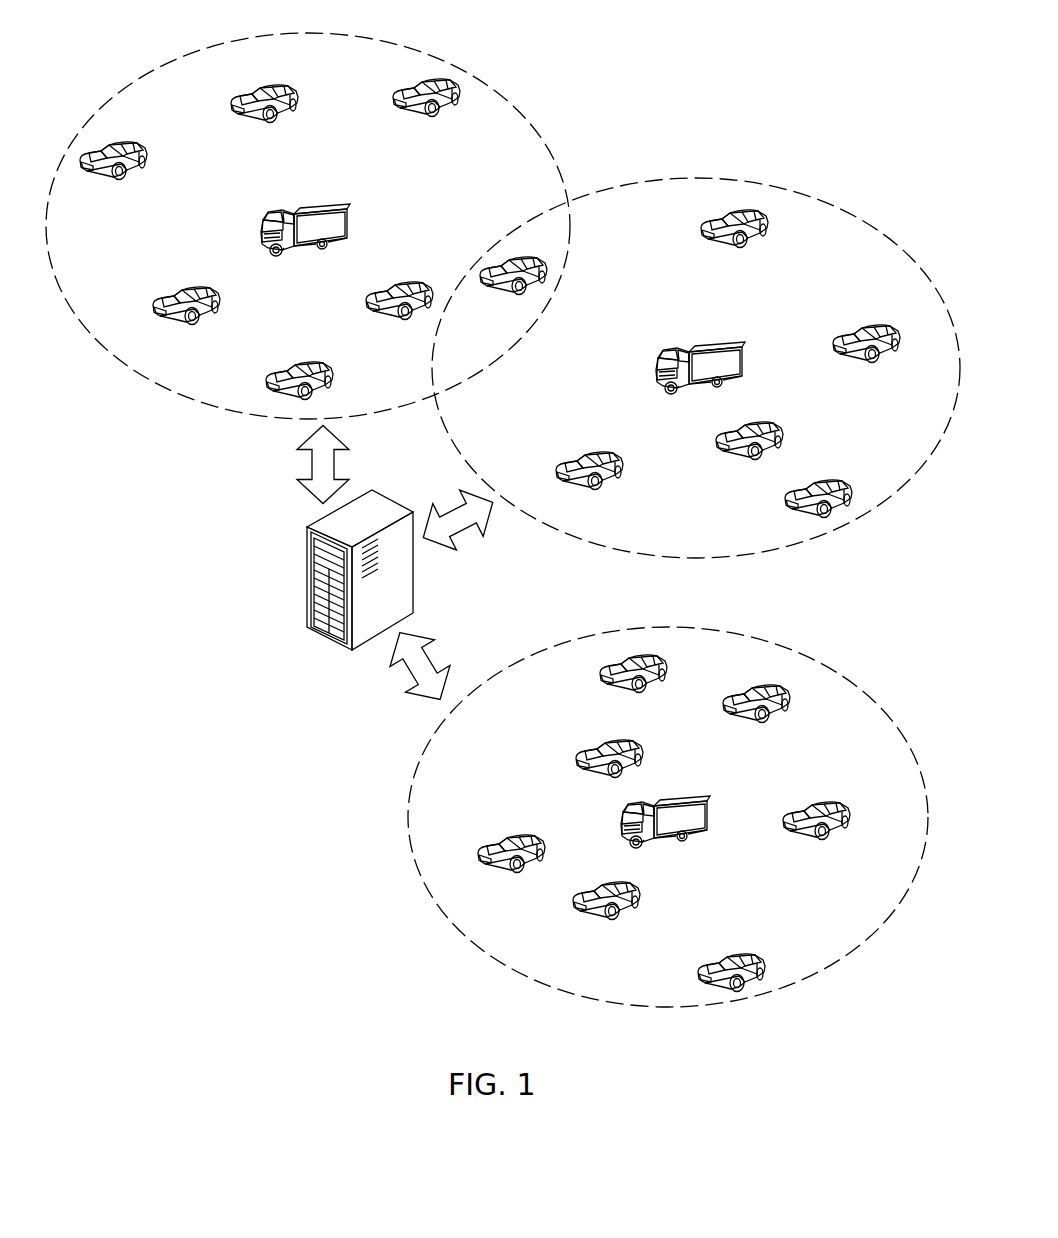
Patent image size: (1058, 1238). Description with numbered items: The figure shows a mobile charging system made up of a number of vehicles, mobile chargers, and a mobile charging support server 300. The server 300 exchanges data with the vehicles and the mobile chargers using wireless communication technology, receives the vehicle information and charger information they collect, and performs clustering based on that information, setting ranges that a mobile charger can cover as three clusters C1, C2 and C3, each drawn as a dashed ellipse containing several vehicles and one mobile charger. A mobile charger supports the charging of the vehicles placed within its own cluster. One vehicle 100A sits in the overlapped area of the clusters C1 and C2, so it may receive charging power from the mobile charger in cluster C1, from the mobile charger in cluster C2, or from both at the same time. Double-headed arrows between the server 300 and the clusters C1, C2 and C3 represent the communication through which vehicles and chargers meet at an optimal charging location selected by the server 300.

The vehicle 100A is at (508, 257).
The mobile charging support server 300 is at (306, 575).
The cluster C1 is at (308, 213).
The cluster C2 is at (696, 352).
The cluster C3 is at (668, 817).